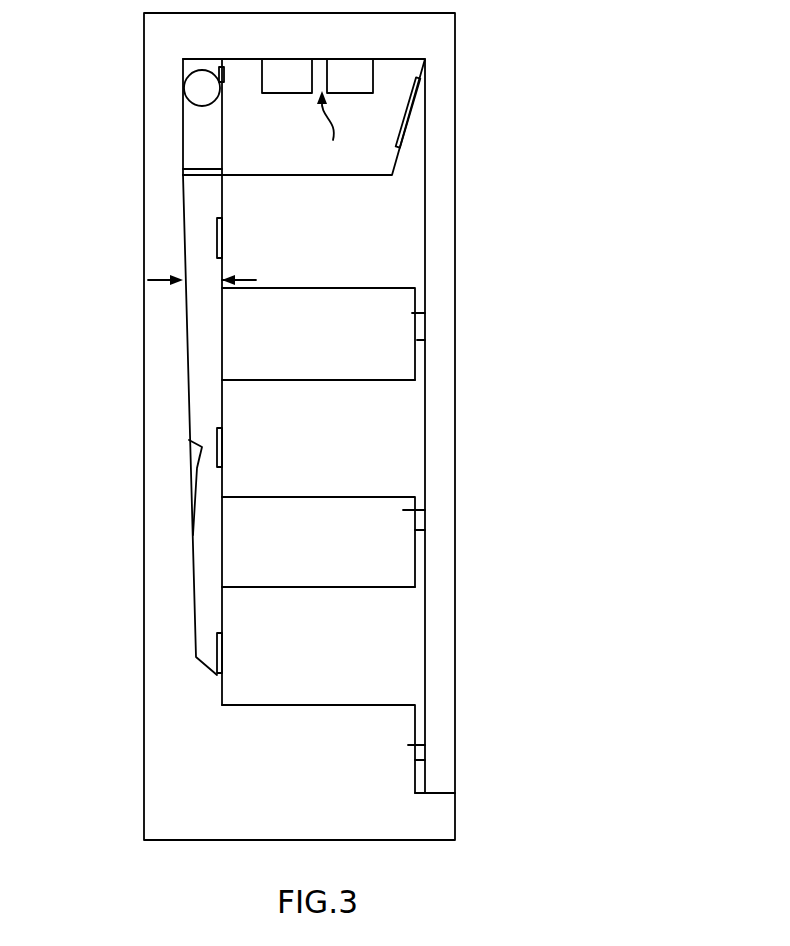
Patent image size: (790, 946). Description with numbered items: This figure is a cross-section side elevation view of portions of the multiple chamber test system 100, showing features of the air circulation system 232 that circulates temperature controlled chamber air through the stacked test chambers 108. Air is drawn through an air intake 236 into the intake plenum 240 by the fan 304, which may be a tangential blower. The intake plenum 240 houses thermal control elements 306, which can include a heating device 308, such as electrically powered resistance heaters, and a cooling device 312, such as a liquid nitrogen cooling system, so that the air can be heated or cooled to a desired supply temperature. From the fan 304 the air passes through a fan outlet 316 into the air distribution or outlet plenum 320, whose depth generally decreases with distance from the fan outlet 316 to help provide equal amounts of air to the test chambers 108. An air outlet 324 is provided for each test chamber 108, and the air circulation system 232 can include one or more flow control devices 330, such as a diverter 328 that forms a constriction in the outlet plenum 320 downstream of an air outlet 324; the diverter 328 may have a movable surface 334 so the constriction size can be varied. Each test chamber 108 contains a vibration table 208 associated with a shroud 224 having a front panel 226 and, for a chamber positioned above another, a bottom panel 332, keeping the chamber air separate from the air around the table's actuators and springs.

The system 100 is at (456, 33).
The test chamber 108 is at (405, 242).
The vibration table 208 is at (393, 290).
The shroud 224 is at (412, 313).
The front panel 226 is at (417, 340).
The air circulation system 232 is at (172, 128).
The air intake 236 is at (412, 118).
The intake plenum 240 is at (382, 153).
The fan 304 is at (198, 70).
The thermal control elements 306 is at (330, 129).
The heating device 308 is at (357, 59).
The cooling device 312 is at (284, 59).
The fan outlet 316 is at (197, 177).
The outlet plenum 320 is at (188, 257).
The air outlet 324 is at (222, 236).
The diverter 328 is at (193, 478).
The flow control device 330 is at (222, 250).
The bottom panel 332 is at (373, 381).
The movable surface 334 is at (190, 443).